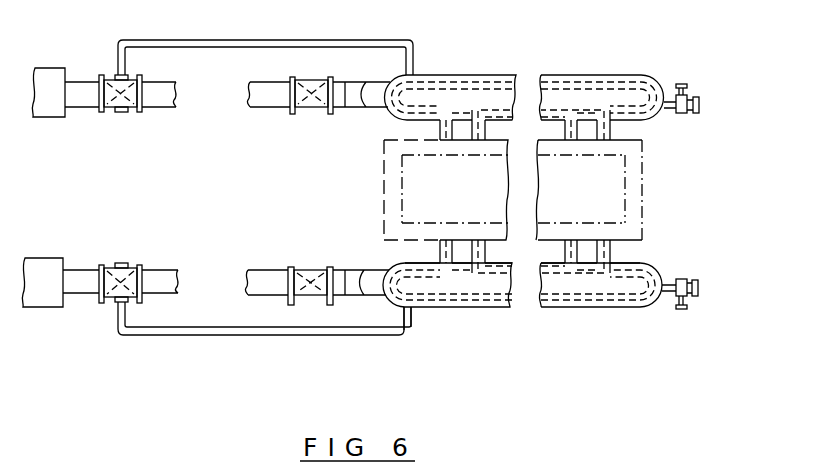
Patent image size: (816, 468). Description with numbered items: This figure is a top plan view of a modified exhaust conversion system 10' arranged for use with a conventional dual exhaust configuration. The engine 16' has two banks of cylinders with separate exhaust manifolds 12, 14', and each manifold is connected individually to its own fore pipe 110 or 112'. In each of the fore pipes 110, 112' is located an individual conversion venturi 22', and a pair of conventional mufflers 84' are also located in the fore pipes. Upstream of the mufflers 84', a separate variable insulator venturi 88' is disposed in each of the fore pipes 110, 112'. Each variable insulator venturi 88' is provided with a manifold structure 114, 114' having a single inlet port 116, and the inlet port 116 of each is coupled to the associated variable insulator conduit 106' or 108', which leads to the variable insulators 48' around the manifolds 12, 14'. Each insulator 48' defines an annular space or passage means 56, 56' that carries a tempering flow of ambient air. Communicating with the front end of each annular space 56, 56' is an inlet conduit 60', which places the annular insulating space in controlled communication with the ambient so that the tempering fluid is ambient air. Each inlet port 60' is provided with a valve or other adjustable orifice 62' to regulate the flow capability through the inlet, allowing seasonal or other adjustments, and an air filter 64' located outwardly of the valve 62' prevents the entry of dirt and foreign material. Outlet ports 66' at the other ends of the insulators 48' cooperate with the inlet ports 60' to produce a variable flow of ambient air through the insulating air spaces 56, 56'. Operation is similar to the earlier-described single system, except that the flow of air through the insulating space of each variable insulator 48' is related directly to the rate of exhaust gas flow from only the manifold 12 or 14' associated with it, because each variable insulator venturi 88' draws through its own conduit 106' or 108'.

The muffler 84' is at (60, 161).
The manifold structure 114 is at (148, 84).
The manifold structure 114' is at (156, 267).
The variable insulator venturi 88' is at (144, 187).
The inlet port 116 is at (119, 74).
The variable insulator conduit 108' is at (265, 43).
The variable insulator conduit 106' is at (264, 335).
The fore pipe 112' is at (303, 114).
The fore pipe 110 is at (258, 270).
The conversion venturi 22' is at (322, 191).
The variable insulator 48' is at (475, 192).
The exhaust conversion system 10' is at (468, 75).
The exhaust manifold 14' is at (526, 94).
The annular insulating space 56' is at (467, 63).
The exhaust manifold 12 is at (447, 303).
The annular space or passage means 56 is at (451, 322).
The engine 16' is at (475, 190).
The inlet conduit 60' is at (557, 185).
The valve 62' is at (712, 205).
The air filter 64' is at (721, 203).
The outlet port 66' is at (398, 342).